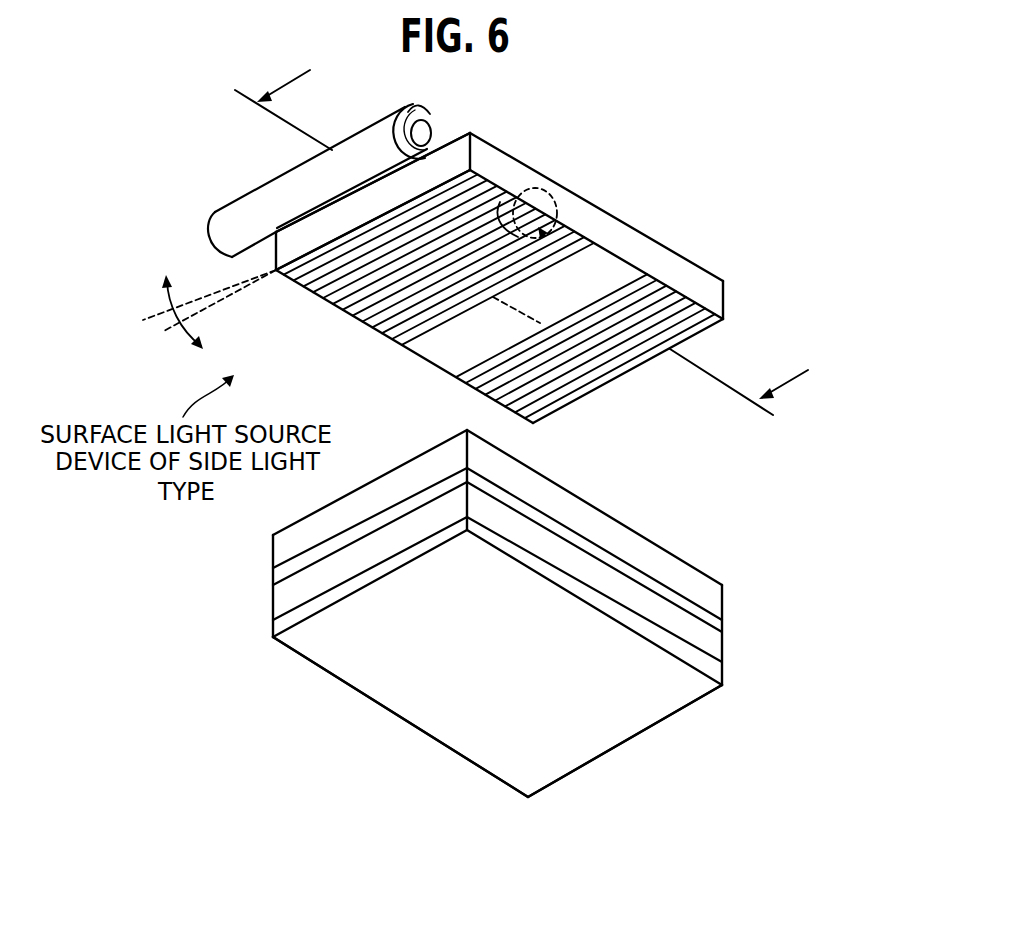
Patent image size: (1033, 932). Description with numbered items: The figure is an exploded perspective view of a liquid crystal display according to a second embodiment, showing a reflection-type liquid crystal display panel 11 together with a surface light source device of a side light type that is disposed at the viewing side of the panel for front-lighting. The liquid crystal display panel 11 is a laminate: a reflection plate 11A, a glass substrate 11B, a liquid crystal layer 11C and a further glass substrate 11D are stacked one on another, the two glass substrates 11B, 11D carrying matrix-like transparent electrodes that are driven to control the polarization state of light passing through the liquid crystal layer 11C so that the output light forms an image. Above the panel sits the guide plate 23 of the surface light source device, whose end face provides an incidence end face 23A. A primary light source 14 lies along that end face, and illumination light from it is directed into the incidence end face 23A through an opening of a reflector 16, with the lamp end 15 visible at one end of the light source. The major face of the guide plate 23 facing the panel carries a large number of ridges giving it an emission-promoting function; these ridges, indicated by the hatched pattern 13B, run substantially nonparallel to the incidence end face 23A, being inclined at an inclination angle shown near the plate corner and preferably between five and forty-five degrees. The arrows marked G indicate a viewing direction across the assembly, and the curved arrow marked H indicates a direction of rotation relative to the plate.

The liquid crystal display panel 11 is at (500, 613).
The reflection plate 11A is at (680, 690).
The glass substrate 11B is at (718, 660).
The liquid crystal layer 11C is at (723, 629).
The glass substrate 11D is at (724, 594).
The light output pattern on light guide plate 13B is at (420, 328).
The primary light source 14 is at (238, 178).
The lamp electrode / end cap 15 is at (432, 126).
The reflector 16 is at (383, 146).
The guide plate 23 is at (643, 253).
The incidence end face 23A is at (287, 250).
The viewing direction G is at (521, 241).
The rotation direction H is at (527, 198).